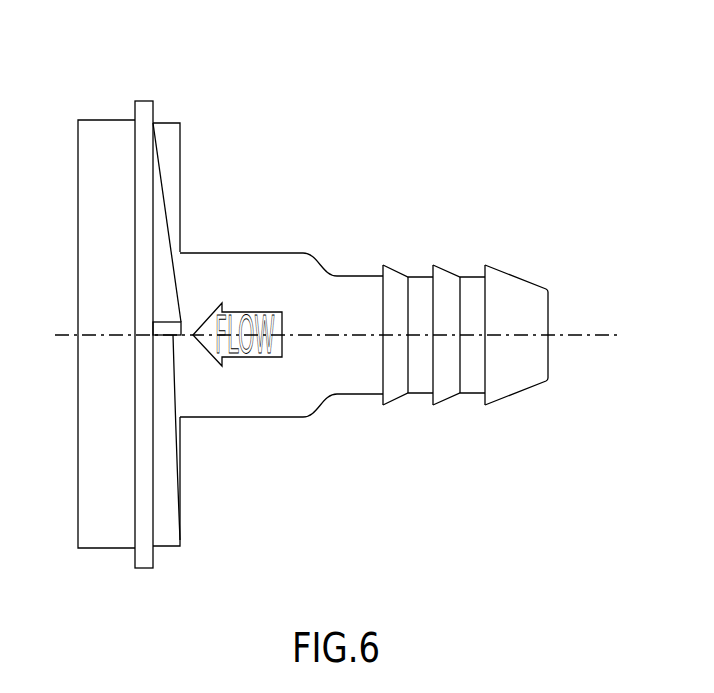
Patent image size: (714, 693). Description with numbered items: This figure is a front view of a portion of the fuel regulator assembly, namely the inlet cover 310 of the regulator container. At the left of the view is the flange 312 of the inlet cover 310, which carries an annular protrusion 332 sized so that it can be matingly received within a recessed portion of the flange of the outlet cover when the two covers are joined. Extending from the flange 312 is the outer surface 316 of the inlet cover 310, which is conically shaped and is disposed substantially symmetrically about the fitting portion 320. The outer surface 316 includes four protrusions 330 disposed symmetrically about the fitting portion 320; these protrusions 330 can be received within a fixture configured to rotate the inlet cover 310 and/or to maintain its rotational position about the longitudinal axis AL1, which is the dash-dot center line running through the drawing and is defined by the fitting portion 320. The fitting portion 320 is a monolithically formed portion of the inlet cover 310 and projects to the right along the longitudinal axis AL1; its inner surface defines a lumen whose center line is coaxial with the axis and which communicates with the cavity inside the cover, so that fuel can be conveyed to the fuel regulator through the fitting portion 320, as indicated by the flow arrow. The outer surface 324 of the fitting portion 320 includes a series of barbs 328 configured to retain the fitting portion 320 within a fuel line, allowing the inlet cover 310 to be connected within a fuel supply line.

The inlet cover 310 is at (405, 102).
The flange 312 is at (146, 543).
The outer surface 316 is at (260, 253).
The fitting portion 320 is at (522, 300).
The outer surface 324 is at (462, 344).
The barbs 328 is at (386, 402).
The protrusions 330 is at (171, 138).
The annular protrusion 332 is at (89, 538).
The longitudinal axis AL1 is at (602, 338).